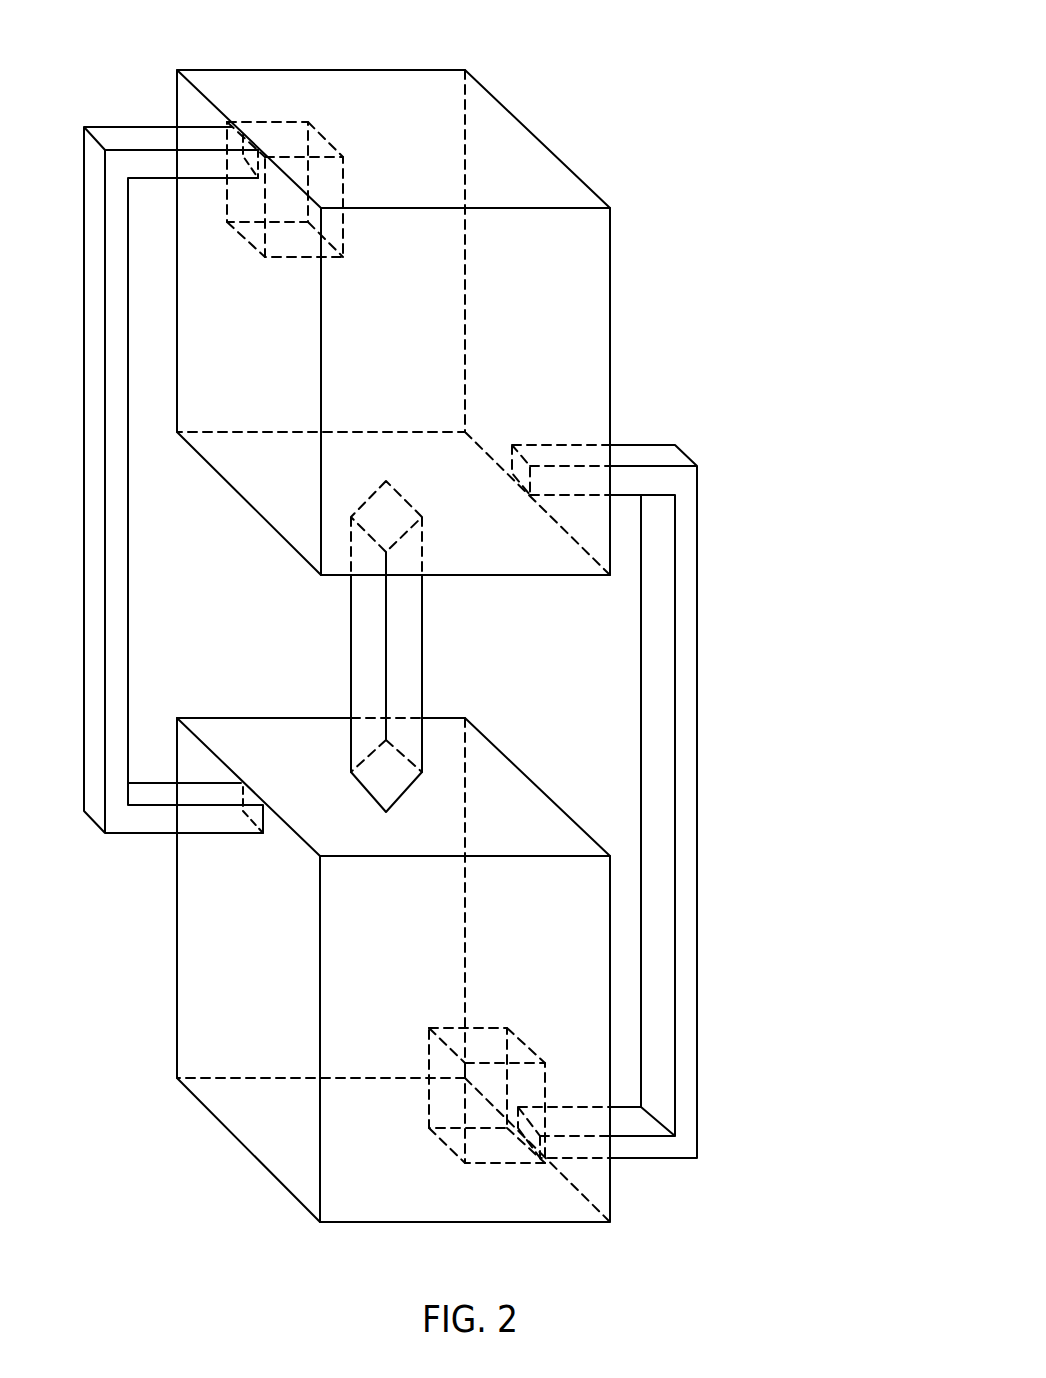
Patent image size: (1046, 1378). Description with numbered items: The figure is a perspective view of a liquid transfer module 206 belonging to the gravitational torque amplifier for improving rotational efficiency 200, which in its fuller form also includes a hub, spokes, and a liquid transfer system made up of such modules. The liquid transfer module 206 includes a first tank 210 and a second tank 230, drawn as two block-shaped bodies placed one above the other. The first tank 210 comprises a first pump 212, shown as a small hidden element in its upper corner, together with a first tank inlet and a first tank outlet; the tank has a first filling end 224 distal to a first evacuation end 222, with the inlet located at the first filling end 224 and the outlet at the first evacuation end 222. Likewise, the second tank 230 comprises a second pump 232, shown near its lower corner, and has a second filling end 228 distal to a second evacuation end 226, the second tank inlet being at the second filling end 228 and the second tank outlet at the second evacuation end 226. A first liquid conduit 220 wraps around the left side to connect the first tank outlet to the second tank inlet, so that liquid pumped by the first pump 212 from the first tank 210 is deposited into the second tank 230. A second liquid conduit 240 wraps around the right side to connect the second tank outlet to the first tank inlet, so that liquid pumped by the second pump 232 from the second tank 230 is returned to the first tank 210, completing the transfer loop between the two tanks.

The gravitational torque amplifier for improving rotational efficiency 200 is at (832, 48).
The liquid transfer module 206 is at (762, 403).
The first tank 210 is at (517, 157).
The first pump 212 is at (283, 135).
The first liquid conduit 220 is at (84, 462).
The first evacuation end 222 is at (595, 228).
The first filling end 224 is at (560, 565).
The second evacuation end 226 is at (233, 1107).
The second filling end 228 is at (255, 733).
The second tank 230 is at (198, 948).
The second pump 232 is at (525, 1087).
The second liquid conduit 240 is at (697, 820).